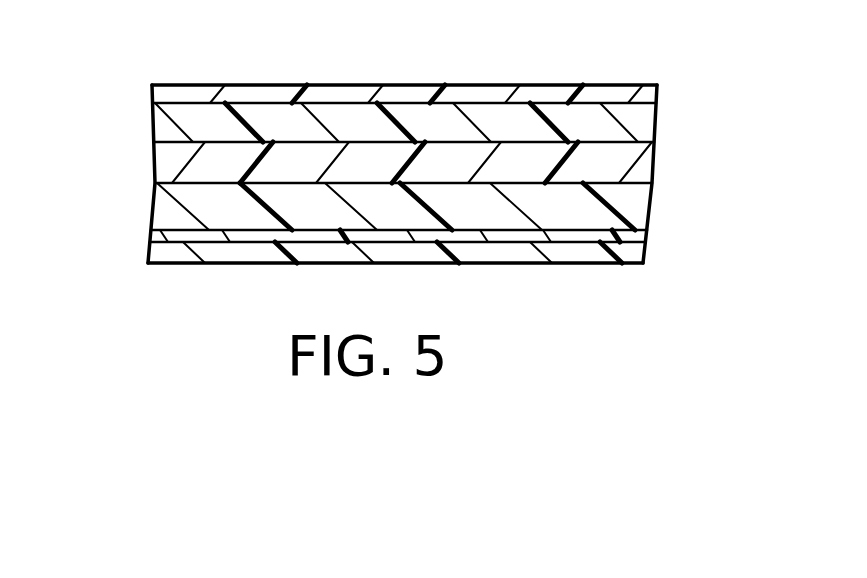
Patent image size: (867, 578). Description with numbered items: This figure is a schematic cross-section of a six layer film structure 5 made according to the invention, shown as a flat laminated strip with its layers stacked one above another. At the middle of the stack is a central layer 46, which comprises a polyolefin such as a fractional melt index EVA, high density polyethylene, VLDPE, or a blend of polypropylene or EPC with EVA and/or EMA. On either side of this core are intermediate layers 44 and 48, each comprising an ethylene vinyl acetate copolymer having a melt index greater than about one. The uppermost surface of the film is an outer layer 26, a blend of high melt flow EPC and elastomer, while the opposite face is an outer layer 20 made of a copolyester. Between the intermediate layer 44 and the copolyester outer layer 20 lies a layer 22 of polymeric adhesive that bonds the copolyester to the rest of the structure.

The six layer film structure 5 is at (661, 47).
The outer layer 20 is at (647, 248).
The layer 22 is at (151, 237).
The outer layer 26 is at (152, 93).
The intermediate layer 44 is at (644, 197).
The central layer 46 is at (154, 162).
The intermediate layer 48 is at (650, 112).